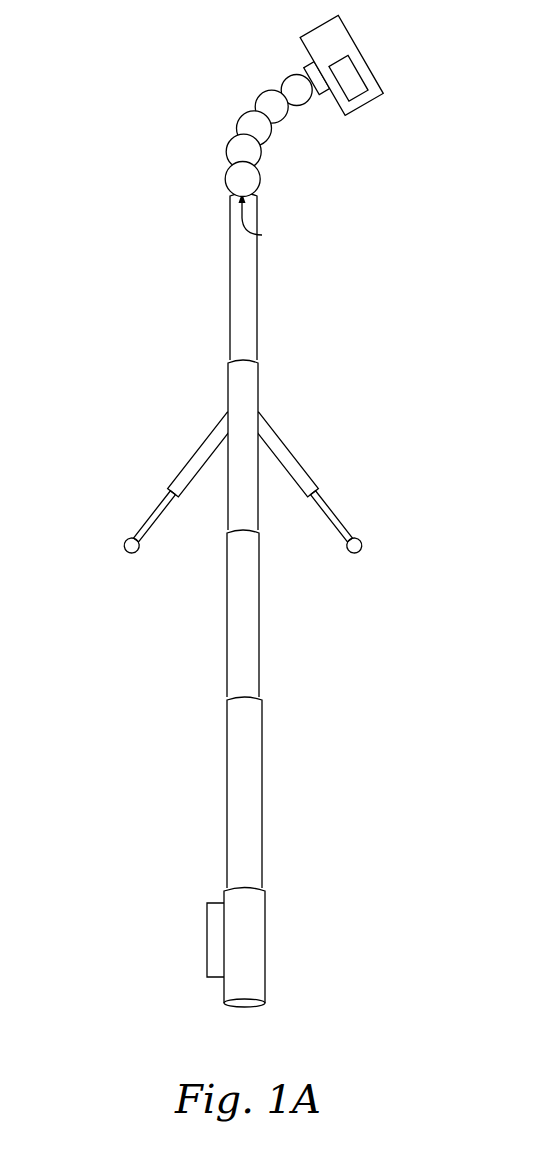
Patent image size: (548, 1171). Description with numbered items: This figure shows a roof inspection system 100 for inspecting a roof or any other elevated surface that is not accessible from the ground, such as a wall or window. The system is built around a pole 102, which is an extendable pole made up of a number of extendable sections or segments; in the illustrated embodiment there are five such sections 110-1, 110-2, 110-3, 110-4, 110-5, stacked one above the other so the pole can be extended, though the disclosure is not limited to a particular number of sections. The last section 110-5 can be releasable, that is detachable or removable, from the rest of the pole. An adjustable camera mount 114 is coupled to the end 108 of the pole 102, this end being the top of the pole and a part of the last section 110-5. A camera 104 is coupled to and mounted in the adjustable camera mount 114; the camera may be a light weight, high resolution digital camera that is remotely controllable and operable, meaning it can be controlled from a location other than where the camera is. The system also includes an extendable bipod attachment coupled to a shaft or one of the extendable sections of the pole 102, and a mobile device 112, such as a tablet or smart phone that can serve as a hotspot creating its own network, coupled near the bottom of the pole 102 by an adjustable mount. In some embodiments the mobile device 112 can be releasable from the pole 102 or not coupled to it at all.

The roof inspection system 100 is at (119, 68).
The pole 102 is at (243, 600).
The camera 104 is at (357, 40).
The end of pole 108 is at (264, 235).
The extendable section 110-1 is at (252, 932).
The extendable section 110-2 is at (238, 764).
The extendable section 110-3 is at (238, 597).
The extendable section 110-4 is at (238, 387).
The extendable section 110-5 is at (238, 265).
The mobile device 112 is at (217, 925).
The adjustable camera mount 114 is at (262, 133).